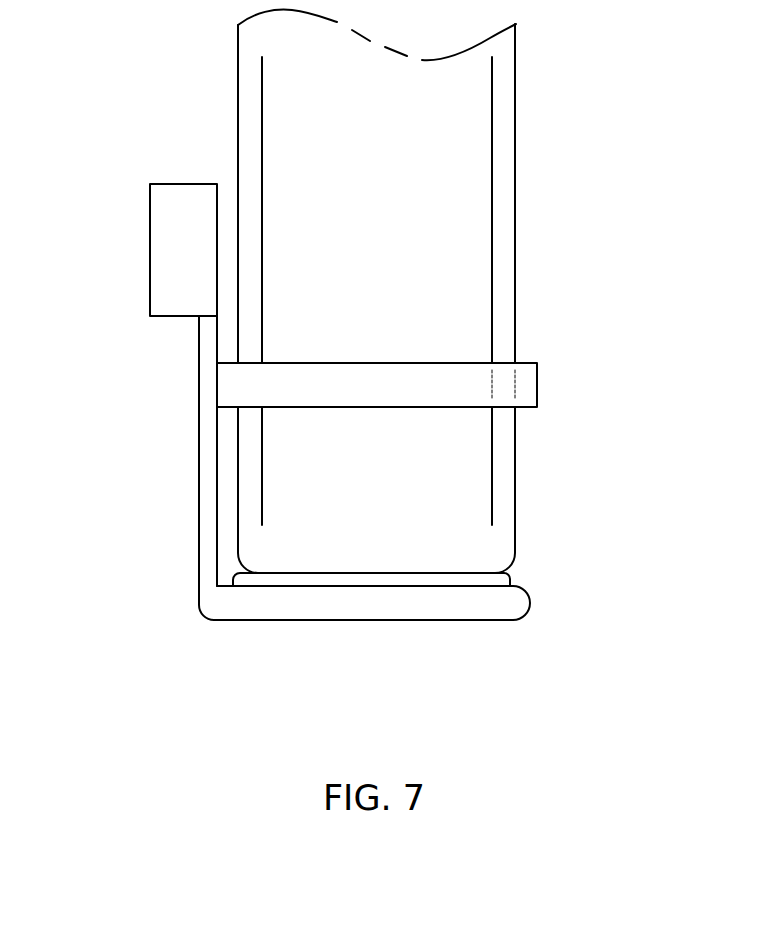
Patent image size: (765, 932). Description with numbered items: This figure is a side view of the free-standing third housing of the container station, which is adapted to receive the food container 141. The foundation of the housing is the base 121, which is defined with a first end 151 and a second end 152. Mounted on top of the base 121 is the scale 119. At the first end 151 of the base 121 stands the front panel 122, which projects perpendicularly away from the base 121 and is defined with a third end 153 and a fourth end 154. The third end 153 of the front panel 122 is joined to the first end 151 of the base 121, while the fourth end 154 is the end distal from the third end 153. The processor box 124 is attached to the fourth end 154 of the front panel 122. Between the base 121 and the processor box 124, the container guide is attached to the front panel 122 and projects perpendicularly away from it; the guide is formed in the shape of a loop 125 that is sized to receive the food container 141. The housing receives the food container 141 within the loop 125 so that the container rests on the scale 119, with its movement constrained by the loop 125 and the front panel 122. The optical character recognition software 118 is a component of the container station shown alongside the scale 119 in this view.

The food container 141 is at (480, 242).
The processor box 124 is at (162, 250).
The loop 125 is at (515, 385).
The fourth end 154 is at (212, 327).
The front panel 122 is at (207, 446).
The third end 153 is at (198, 600).
The first end 151 is at (223, 618).
The base 121 is at (441, 612).
The second end 152 is at (518, 605).
The optical character recognition software 118 is at (507, 575).
The scale 119 is at (508, 580).